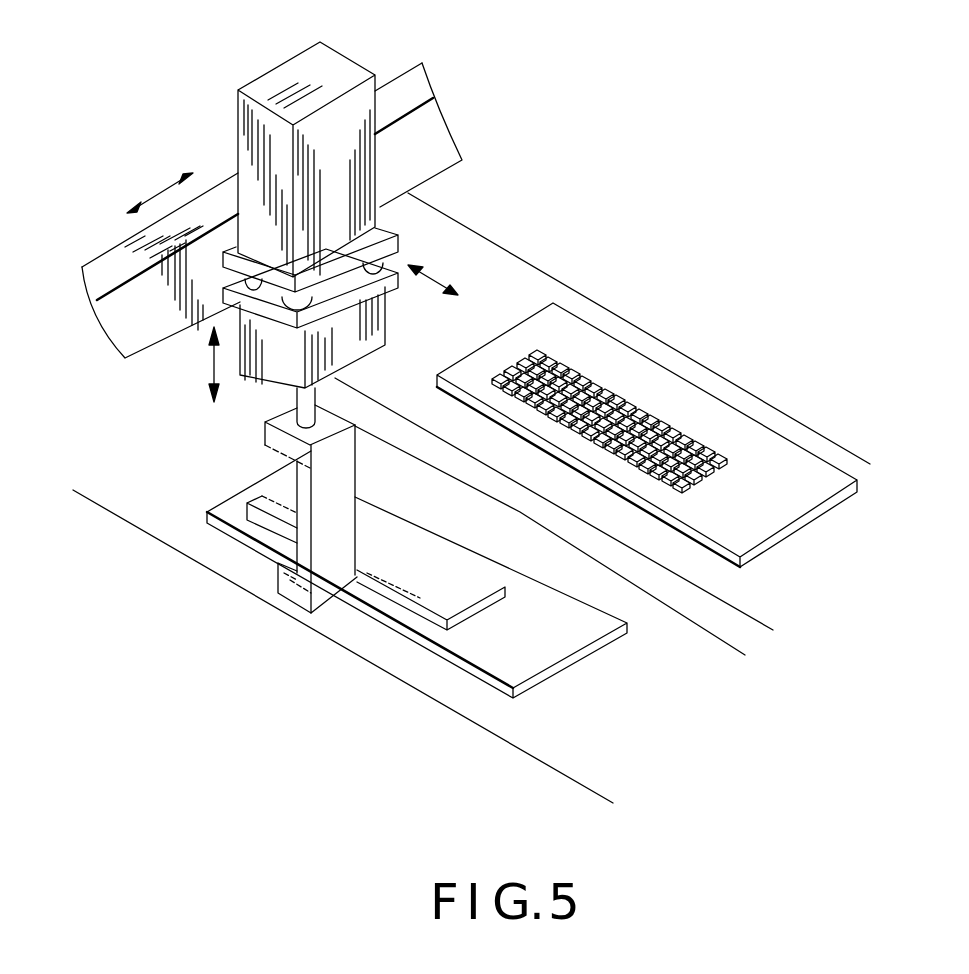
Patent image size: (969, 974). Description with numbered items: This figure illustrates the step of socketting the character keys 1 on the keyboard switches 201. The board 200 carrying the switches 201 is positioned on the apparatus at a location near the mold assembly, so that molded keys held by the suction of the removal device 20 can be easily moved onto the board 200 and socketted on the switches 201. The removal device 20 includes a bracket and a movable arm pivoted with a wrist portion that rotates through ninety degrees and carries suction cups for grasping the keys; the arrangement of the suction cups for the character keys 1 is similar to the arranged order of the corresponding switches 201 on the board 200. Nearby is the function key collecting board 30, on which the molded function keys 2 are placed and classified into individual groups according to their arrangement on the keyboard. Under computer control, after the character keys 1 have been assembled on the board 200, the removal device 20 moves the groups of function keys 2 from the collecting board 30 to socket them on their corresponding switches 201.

The removal device 20 is at (361, 101).
The character keys 1 is at (453, 632).
The switches 201 is at (260, 527).
The board 200 is at (513, 658).
The function key collecting board 30 is at (765, 457).
The function keys 2 is at (665, 421).